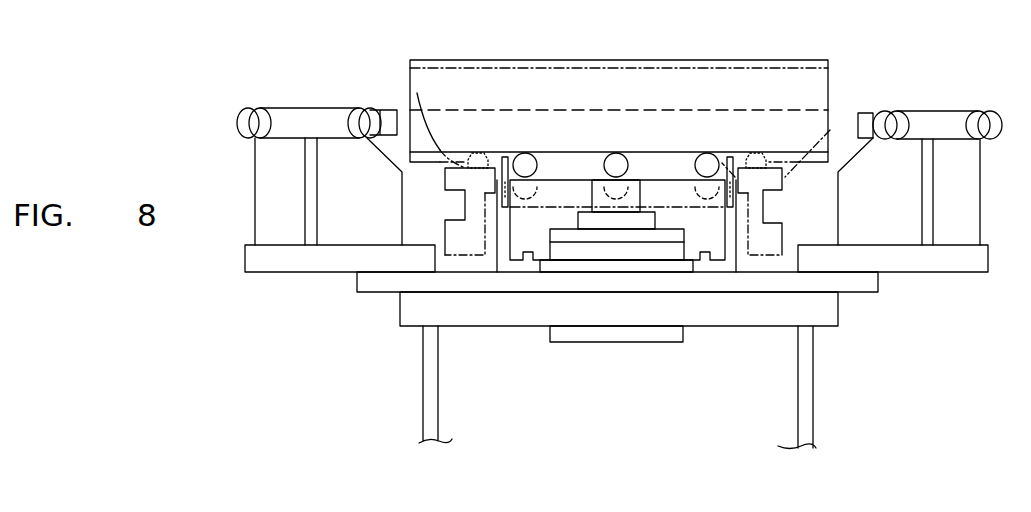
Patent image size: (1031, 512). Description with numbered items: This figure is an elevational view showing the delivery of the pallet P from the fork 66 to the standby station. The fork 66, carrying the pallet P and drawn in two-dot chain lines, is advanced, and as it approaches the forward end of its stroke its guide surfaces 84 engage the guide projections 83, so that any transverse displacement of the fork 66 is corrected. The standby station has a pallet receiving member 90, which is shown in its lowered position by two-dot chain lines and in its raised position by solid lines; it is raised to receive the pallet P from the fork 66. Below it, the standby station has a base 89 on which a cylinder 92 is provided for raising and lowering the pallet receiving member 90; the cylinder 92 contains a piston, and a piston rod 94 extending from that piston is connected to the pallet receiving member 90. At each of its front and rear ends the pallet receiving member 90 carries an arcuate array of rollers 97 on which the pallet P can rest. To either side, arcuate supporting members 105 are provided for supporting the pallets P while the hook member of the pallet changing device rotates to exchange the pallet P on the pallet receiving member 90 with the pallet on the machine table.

The pallet P is at (653, 63).
The fork 66 is at (407, 85).
The guide projections 83 is at (500, 248).
The guide surfaces 84 is at (500, 175).
The base 89 is at (602, 318).
The pallet receiving member 90 is at (580, 160).
The cylinder 92 is at (652, 252).
The piston rod 94 is at (638, 195).
The rollers 97 is at (525, 153).
The arcuate supporting members 105 is at (300, 115).